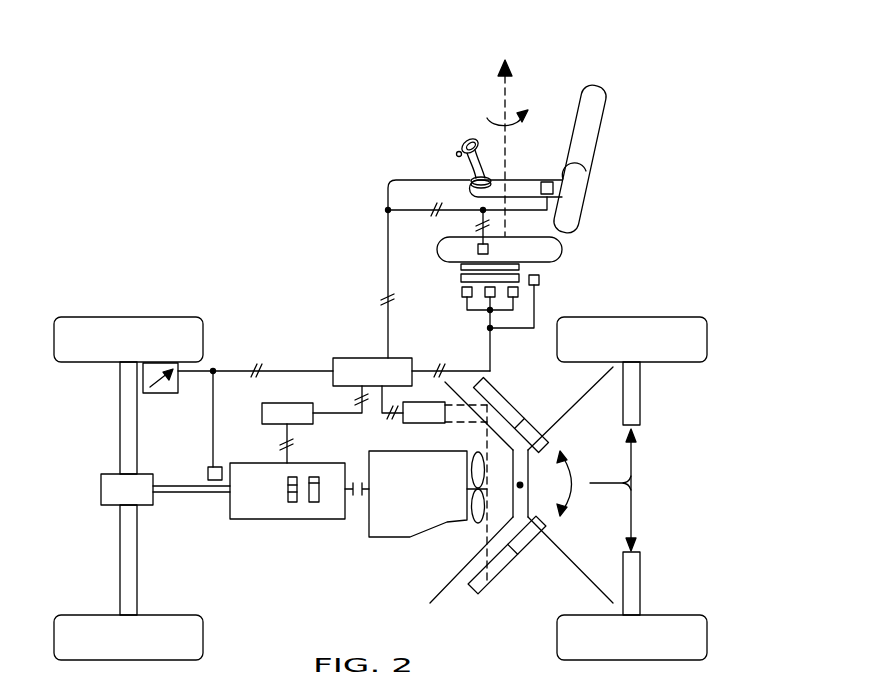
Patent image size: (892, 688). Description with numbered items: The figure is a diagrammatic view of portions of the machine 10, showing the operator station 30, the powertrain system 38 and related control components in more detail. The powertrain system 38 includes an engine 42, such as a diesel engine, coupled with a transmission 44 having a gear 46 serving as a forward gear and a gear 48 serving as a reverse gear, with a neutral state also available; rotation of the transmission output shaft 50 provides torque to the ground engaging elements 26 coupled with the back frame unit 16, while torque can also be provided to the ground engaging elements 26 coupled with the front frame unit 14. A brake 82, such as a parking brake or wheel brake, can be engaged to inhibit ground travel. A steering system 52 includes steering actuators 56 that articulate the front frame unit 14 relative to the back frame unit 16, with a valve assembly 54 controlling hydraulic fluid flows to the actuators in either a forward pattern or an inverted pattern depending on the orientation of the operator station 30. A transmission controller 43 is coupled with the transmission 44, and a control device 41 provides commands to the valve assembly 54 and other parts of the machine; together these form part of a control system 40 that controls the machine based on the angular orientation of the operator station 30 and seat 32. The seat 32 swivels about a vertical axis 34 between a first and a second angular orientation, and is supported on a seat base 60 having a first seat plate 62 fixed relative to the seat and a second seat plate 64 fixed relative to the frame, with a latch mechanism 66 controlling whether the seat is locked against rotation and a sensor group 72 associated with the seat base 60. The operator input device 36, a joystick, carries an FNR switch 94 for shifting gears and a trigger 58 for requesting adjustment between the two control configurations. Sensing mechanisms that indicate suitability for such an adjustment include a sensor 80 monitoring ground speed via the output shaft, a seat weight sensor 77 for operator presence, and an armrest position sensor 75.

The machine 10 is at (722, 321).
The front frame unit 14 is at (586, 572).
The back frame unit 16 is at (456, 571).
The ground engaging elements 26 is at (184, 614).
The operator station 30 is at (520, 209).
The seat 32 is at (601, 148).
The vertical axis 34 is at (508, 92).
The operator input device 36 is at (442, 140).
The powertrain system 38 is at (294, 488).
The control system 40 is at (334, 343).
The control device 41 is at (333, 358).
The engine 42 is at (388, 538).
The transmission controller 43 is at (262, 408).
The transmission 44 is at (299, 513).
The gear 46 is at (314, 503).
The gear 48 is at (287, 483).
The transmission output shaft 50 is at (187, 497).
The steering system 52 is at (515, 467).
The valve assembly 54 is at (396, 417).
The steering actuators 56 is at (518, 402).
The trigger 58 is at (452, 152).
The seat base 60 is at (450, 270).
The first seat plate 62 is at (496, 278).
The second seat plate 64 is at (460, 278).
The latch mechanism 66 is at (540, 283).
The sensor group 72 is at (456, 304).
The armrest position sensor 75 is at (546, 181).
The seat weight sensor 77 is at (490, 249).
The sensor 80 is at (212, 466).
The brake 82 is at (160, 394).
The FNR switch 94 is at (473, 139).